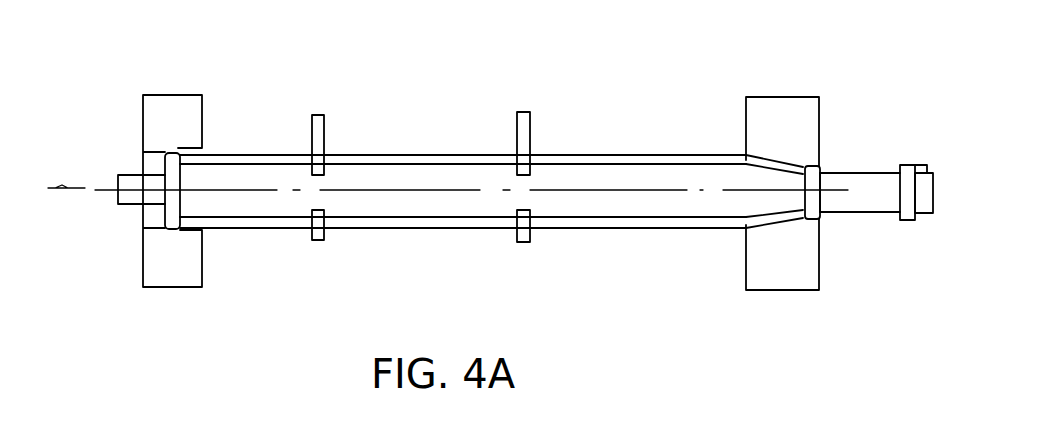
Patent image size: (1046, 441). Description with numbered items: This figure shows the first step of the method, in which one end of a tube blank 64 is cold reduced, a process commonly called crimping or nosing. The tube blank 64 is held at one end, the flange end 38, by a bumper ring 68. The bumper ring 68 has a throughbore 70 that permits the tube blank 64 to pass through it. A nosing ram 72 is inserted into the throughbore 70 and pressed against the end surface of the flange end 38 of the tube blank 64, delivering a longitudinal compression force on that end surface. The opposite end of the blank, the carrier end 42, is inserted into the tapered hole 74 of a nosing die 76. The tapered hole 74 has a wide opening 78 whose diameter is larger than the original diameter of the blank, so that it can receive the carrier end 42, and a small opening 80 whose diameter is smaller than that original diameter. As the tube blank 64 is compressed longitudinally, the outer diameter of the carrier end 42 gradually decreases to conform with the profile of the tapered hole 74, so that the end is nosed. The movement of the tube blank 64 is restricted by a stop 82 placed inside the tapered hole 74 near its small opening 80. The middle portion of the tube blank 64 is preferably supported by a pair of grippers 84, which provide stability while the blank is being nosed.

The flange end 38 is at (188, 210).
The carrier end 42 is at (798, 167).
The tube blank 64 is at (632, 160).
The bumper ring 68 is at (178, 127).
The throughbore 70 is at (190, 155).
The nosing ram 72 is at (142, 185).
The tapered hole 74 is at (756, 158).
The nosing die 76 is at (782, 140).
The wide opening 78 is at (745, 230).
The small opening 80 is at (810, 220).
The stop 82 is at (813, 200).
The grippers 84 is at (517, 140).